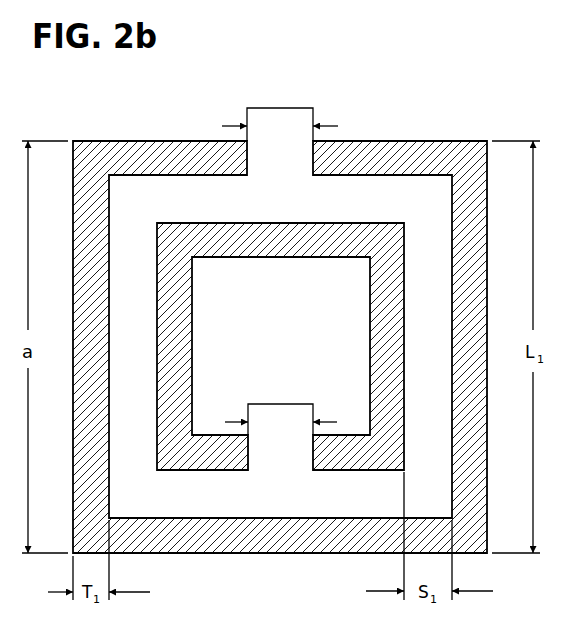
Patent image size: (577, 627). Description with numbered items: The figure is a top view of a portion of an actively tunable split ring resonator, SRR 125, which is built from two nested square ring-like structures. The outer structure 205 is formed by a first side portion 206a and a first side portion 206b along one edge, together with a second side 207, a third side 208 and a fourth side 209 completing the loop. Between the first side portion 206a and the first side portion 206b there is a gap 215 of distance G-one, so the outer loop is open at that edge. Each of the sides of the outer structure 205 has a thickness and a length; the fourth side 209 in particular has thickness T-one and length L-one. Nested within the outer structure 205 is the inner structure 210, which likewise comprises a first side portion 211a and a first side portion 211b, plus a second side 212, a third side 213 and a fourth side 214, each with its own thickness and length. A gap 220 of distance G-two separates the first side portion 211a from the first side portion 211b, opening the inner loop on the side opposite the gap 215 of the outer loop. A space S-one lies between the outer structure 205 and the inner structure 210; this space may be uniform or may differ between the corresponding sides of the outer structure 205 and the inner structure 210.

The split ring resonator 125 is at (234, 70).
The outer structure 205 is at (478, 228).
The first side portion 206a is at (438, 139).
The first side portion 206b is at (119, 139).
The second side 207 is at (488, 390).
The third side 208 is at (262, 554).
The fourth side 209 is at (72, 392).
The inner structure 210 is at (355, 222).
The first side portion 211a is at (198, 433).
The first side portion 211b is at (360, 433).
The second side 212 is at (194, 323).
The third side 213 is at (262, 259).
The fourth side 214 is at (369, 320).
The gap 215 is at (280, 108).
The gap 220 is at (280, 404).